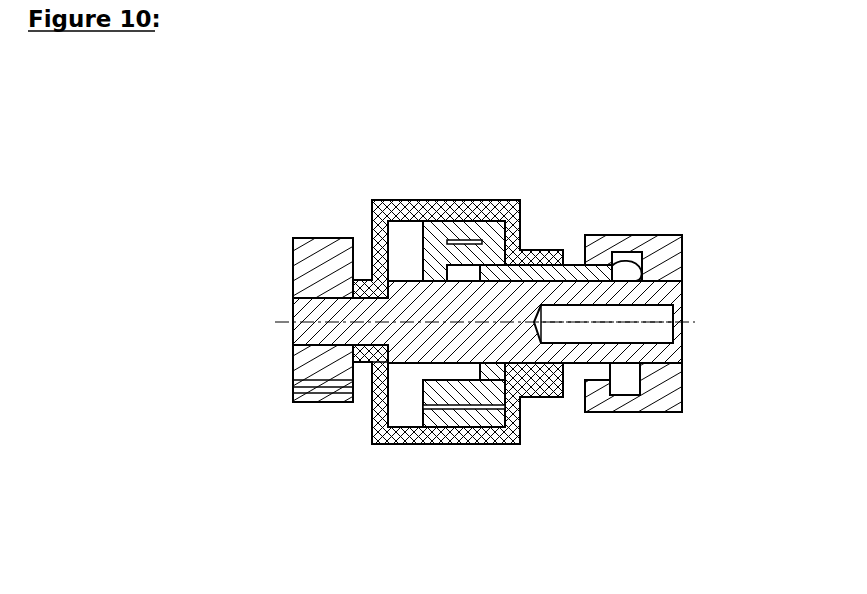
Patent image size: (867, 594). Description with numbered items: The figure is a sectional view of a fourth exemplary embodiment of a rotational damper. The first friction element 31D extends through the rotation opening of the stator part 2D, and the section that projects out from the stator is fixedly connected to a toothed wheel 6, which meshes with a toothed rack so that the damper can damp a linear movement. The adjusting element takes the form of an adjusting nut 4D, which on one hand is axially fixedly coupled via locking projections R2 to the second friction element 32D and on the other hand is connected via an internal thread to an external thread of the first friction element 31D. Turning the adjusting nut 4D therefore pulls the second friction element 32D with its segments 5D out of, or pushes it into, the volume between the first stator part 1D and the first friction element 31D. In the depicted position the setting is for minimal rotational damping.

The first stator part 1D is at (479, 222).
The stator part 2D is at (517, 237).
The adjusting nut 4D is at (668, 257).
The segments 5D is at (463, 392).
The toothed wheel 6 is at (313, 250).
The first friction element 31D is at (663, 352).
The second friction element 32D is at (487, 393).
The locking projections R2 is at (623, 272).